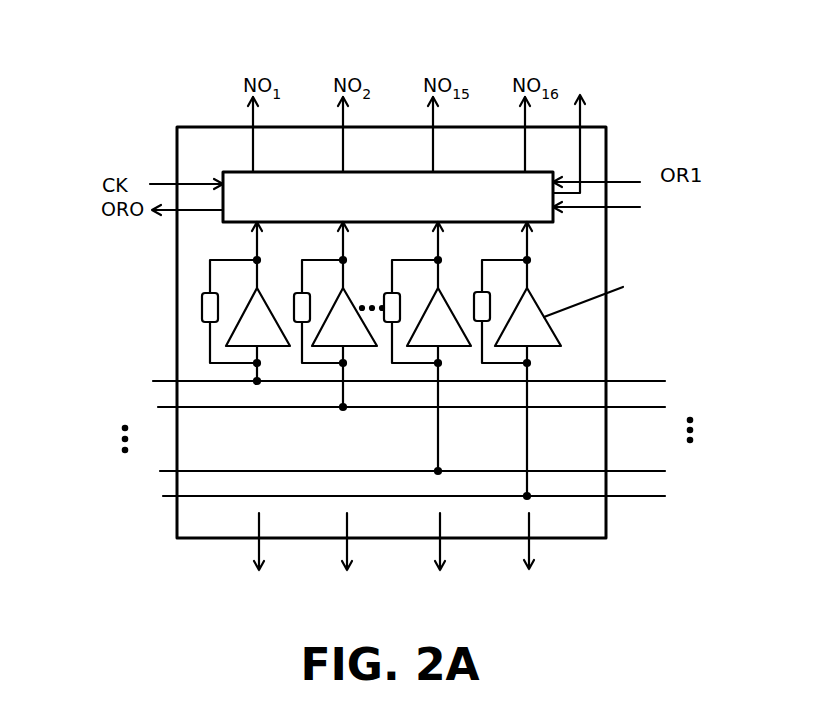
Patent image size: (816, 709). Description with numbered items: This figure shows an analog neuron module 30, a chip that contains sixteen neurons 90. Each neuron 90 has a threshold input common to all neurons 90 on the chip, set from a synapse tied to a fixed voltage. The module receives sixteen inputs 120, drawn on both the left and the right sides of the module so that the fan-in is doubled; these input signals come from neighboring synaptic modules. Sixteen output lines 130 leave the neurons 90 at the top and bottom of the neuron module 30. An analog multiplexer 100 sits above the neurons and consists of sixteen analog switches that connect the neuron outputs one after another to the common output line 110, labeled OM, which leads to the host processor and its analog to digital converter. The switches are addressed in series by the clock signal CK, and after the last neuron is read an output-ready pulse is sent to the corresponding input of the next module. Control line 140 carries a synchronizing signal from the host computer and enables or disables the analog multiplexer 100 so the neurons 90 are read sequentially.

The neuron module 30 is at (230, 108).
The analog multiplexer 100 is at (370, 178).
The common output line 110 is at (587, 113).
The control line PHI2 140 is at (683, 216).
The neuron 90 is at (266, 302).
The inputs 120 is at (105, 412).
The output lines 130 is at (352, 596).